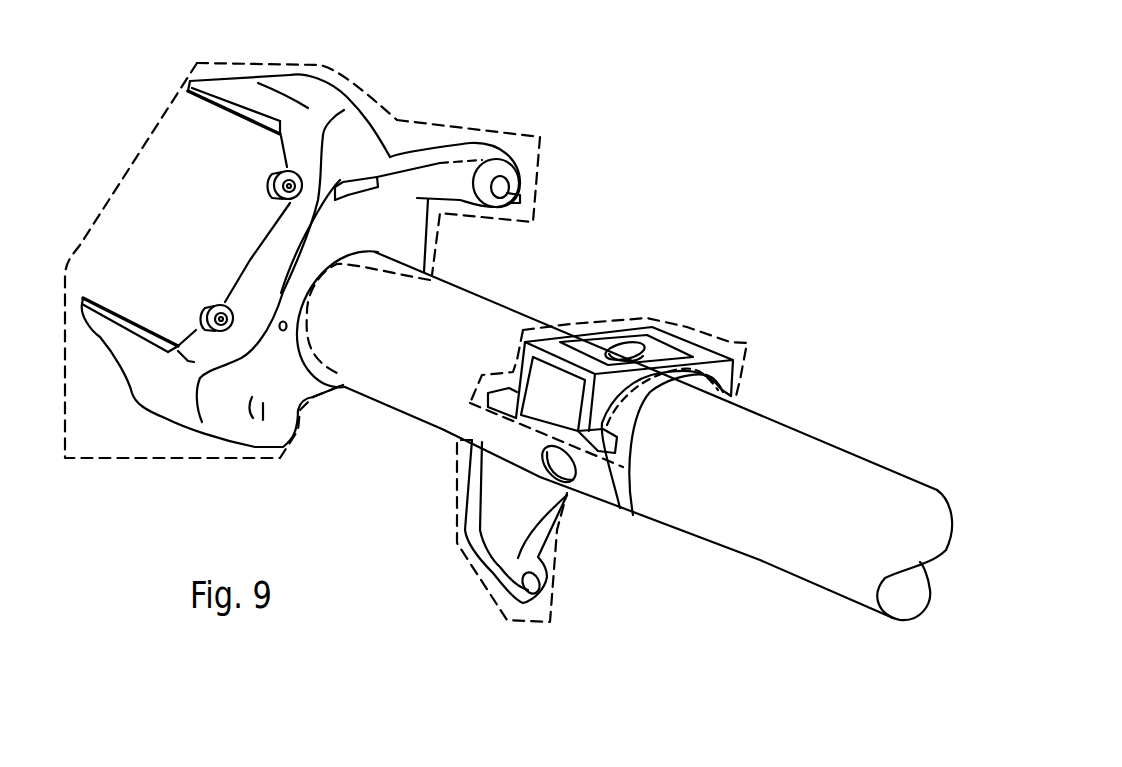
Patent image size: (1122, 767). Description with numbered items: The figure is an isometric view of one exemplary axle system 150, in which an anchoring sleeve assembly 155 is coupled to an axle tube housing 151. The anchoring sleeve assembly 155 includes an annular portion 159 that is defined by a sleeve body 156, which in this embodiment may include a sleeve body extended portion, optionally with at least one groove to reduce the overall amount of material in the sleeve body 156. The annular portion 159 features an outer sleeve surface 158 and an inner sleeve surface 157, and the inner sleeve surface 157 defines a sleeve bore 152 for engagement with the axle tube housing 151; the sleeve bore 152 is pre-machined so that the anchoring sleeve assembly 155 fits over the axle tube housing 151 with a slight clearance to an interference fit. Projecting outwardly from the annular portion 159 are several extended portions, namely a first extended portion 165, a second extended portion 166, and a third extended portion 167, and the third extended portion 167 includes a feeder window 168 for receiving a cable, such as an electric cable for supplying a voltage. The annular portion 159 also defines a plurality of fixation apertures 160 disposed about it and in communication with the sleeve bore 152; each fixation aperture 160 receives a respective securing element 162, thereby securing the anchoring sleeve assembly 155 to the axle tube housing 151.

The axle system 150 is at (747, 181).
The axle tube housing 151 is at (763, 497).
The sleeve bore 152 is at (626, 481).
The anchoring sleeve assembly 155 is at (568, 255).
The sleeve body 156 is at (612, 500).
The inner sleeve surface 157 is at (638, 429).
The outer sleeve surface 158 is at (628, 408).
The annular portion 159 is at (684, 383).
The fixation aperture 160 is at (625, 350).
The securing element 162 is at (560, 467).
The first extended portion 165 is at (739, 350).
The second extended portion 166 is at (480, 592).
The third extended portion 167 is at (128, 178).
The feeder window 168 is at (352, 178).